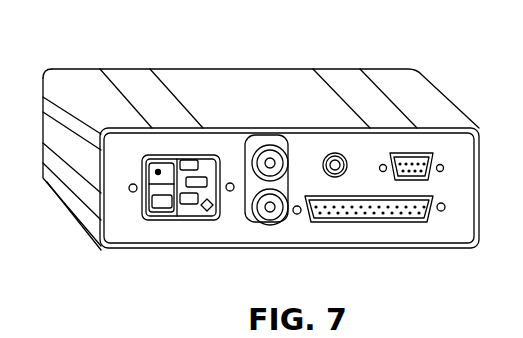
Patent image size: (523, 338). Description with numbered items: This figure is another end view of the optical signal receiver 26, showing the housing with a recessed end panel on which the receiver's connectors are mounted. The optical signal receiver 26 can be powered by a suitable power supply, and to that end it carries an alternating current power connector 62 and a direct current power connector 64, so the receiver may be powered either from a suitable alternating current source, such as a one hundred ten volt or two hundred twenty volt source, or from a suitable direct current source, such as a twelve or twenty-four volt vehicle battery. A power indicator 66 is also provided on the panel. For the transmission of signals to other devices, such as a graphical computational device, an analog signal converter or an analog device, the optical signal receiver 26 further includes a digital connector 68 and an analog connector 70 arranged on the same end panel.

The optical signal receiver 26 is at (87, 82).
The alternating current power connector 62 is at (189, 165).
The direct current power connector 64 is at (250, 186).
The power indicator 66 is at (335, 158).
The digital connector 68 is at (380, 222).
The analog connector 70 is at (413, 166).